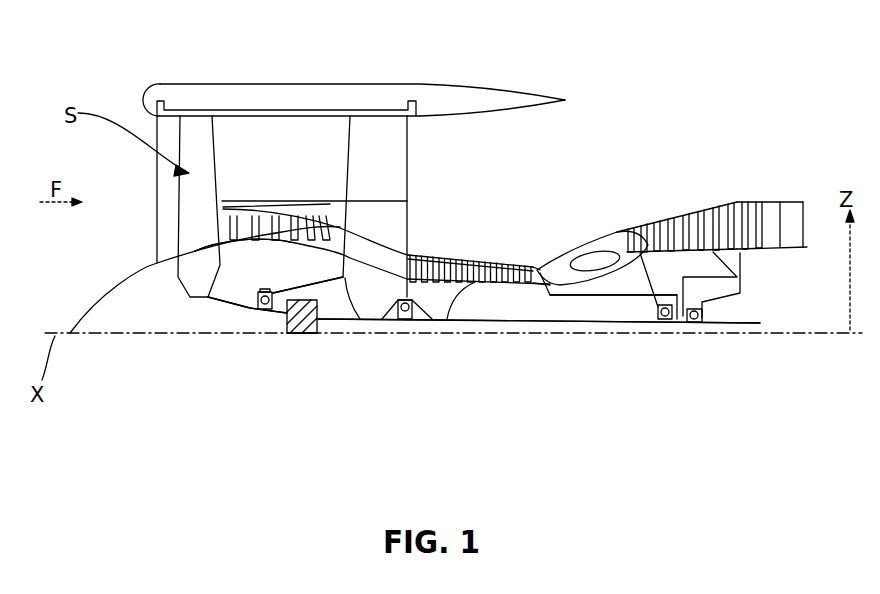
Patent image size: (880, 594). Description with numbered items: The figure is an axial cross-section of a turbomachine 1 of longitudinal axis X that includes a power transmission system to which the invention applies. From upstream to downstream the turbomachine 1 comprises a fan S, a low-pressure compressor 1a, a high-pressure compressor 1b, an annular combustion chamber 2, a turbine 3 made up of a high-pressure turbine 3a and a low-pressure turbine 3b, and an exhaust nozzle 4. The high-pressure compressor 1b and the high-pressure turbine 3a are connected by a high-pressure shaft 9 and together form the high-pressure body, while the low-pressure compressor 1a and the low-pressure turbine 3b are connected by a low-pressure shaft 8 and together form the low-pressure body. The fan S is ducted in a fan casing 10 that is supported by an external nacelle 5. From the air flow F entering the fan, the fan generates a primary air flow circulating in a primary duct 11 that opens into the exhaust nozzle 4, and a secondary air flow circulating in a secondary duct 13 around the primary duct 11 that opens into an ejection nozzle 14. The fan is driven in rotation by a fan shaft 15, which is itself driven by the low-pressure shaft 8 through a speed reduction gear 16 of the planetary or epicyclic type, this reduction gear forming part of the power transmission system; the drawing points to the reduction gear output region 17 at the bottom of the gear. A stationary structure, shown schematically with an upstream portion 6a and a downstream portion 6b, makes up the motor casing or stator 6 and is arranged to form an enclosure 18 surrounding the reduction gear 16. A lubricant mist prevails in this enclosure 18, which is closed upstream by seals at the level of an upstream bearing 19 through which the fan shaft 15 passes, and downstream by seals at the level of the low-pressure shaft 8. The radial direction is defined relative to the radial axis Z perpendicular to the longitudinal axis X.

The turbomachine 1 is at (677, 128).
The low-pressure compressor 1a is at (247, 217).
The high-pressure compressor 1b is at (440, 257).
The annular combustion chamber 2 is at (597, 260).
The turbine 3 is at (466, 348).
The high-pressure turbine 3a is at (630, 245).
The low-pressure turbine 3b is at (740, 201).
The exhaust nozzle 4 is at (803, 201).
The external nacelle 5 is at (370, 87).
The motor casing or stator 6 is at (332, 240).
The upstream portion 6a is at (307, 280).
The downstream portion 6b is at (358, 302).
The low-pressure shaft 8 is at (500, 325).
The high-pressure shaft 9 is at (568, 296).
The fan casing 10 is at (230, 109).
The primary duct 11 is at (547, 257).
The secondary duct 13 is at (318, 114).
The ejection nozzle 14 is at (535, 97).
The fan shaft 15 is at (250, 311).
The speed reduction gear 16 is at (304, 344).
The gearbox output 17 is at (302, 345).
The enclosure 18 is at (322, 319).
The upstream bearing 19 is at (258, 297).